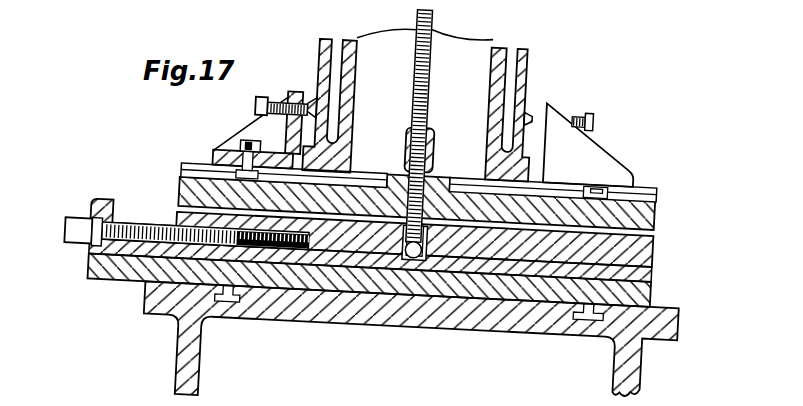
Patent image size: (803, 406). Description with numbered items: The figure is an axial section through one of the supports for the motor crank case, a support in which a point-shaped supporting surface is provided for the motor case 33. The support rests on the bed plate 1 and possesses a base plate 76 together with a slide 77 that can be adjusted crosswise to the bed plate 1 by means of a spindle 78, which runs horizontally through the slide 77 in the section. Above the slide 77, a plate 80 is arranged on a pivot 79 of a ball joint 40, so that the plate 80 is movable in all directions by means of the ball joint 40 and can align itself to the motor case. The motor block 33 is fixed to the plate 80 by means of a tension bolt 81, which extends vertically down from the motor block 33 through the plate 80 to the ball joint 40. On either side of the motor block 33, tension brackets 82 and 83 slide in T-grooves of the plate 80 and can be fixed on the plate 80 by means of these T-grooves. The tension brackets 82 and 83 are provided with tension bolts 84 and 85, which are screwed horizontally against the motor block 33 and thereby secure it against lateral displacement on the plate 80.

The bed plate 1 is at (445, 320).
The motor case 33 is at (489, 72).
The ball joint 40 is at (647, 266).
The base plate 76 is at (390, 282).
The slide 77 is at (649, 244).
The spindle 78 is at (132, 225).
The pivot 79 is at (428, 177).
The plate 80 is at (652, 213).
The tension bolt 81 is at (433, 30).
The tension bracket 82 is at (257, 135).
The tension bracket 83 is at (600, 160).
The tension bolt 84 is at (258, 97).
The tension bolt 85 is at (603, 103).